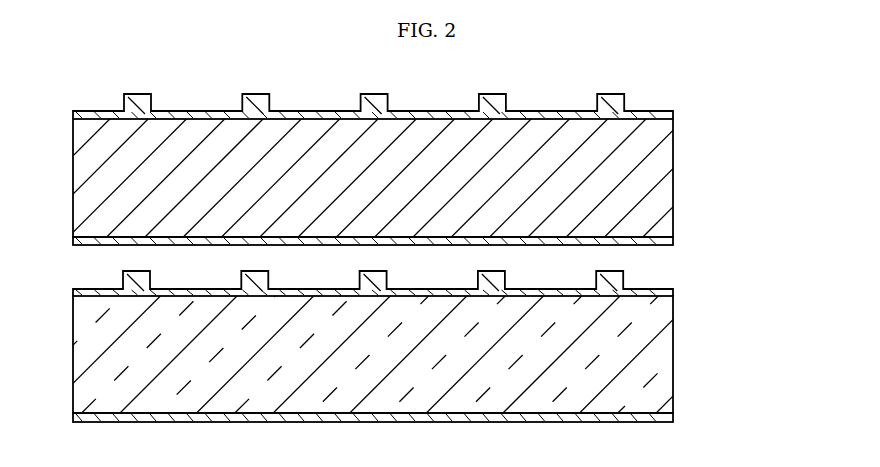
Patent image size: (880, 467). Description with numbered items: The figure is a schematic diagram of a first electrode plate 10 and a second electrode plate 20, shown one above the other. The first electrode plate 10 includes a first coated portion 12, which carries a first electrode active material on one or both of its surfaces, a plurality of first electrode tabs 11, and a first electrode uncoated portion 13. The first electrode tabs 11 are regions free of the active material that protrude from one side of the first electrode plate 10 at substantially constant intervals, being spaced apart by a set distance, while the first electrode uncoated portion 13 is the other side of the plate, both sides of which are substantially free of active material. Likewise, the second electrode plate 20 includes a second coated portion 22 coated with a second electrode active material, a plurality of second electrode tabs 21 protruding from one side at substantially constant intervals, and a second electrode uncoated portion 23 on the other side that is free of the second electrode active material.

The first electrode plate 10 is at (391, 174).
The first electrode tabs 11 is at (624, 101).
The first coated portion 12 is at (673, 180).
The first electrode uncoated portion 13 is at (404, 244).
The second electrode plate 20 is at (393, 351).
The second electrode tabs 21 is at (624, 277).
The second coated portion 22 is at (673, 357).
The second electrode uncoated portion 23 is at (404, 421).